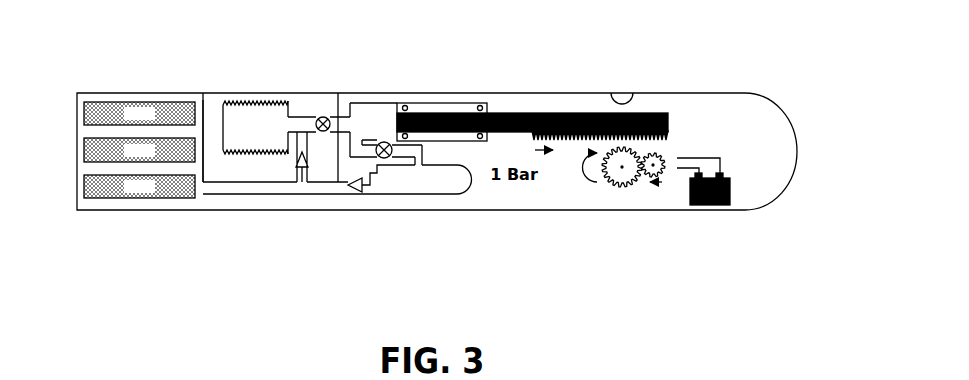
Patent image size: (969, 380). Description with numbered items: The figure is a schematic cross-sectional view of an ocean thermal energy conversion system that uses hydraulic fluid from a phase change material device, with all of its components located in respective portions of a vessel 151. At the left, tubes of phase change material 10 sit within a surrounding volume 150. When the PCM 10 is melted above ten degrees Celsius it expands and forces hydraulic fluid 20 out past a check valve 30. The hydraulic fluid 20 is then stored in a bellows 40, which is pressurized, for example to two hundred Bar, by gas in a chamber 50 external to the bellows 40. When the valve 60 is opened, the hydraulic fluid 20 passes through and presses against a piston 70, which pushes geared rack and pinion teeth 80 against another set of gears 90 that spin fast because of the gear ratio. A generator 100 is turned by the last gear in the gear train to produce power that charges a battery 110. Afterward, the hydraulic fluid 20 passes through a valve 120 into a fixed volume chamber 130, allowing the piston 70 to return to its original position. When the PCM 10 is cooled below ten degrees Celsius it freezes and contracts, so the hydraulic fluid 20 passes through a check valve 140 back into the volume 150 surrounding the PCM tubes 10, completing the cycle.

The phase change material 10 is at (81, 107).
The volume 150 is at (81, 168).
The vessel 151 is at (751, 93).
The chamber 50 is at (213, 107).
The bellows 40 is at (240, 103).
The valve 60 is at (316, 112).
The hydraulic fluid 20 is at (362, 115).
The check valve 30 is at (296, 173).
The check valve 140 is at (351, 197).
The fixed volume chamber 130 is at (413, 197).
The valve 120 is at (387, 139).
The piston 70 is at (508, 110).
The geared rack and pinion teeth 80 is at (573, 148).
The gears 90 is at (622, 189).
The generator 100 is at (656, 178).
The battery 110 is at (710, 211).